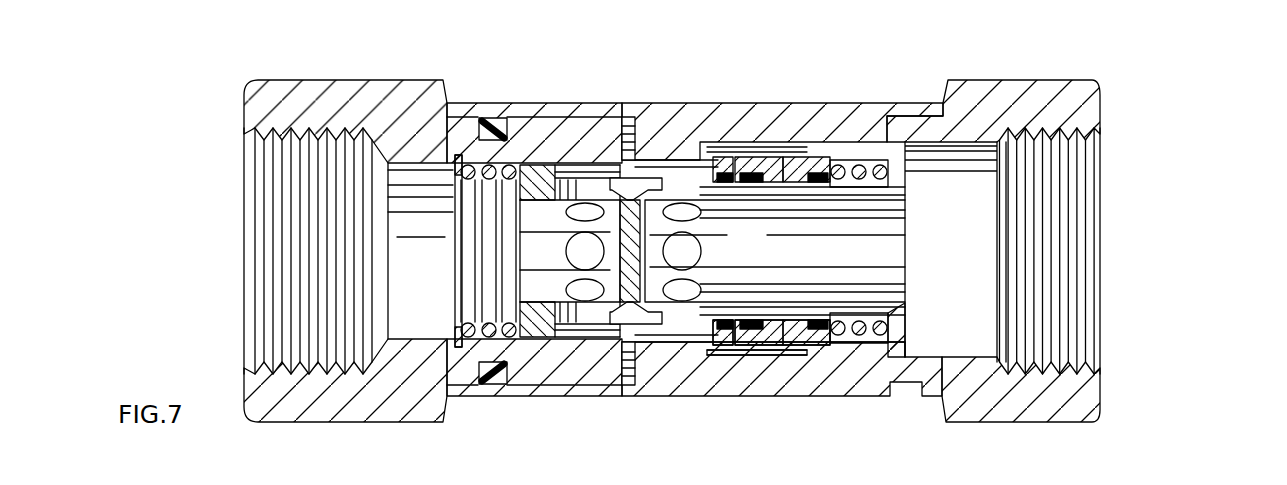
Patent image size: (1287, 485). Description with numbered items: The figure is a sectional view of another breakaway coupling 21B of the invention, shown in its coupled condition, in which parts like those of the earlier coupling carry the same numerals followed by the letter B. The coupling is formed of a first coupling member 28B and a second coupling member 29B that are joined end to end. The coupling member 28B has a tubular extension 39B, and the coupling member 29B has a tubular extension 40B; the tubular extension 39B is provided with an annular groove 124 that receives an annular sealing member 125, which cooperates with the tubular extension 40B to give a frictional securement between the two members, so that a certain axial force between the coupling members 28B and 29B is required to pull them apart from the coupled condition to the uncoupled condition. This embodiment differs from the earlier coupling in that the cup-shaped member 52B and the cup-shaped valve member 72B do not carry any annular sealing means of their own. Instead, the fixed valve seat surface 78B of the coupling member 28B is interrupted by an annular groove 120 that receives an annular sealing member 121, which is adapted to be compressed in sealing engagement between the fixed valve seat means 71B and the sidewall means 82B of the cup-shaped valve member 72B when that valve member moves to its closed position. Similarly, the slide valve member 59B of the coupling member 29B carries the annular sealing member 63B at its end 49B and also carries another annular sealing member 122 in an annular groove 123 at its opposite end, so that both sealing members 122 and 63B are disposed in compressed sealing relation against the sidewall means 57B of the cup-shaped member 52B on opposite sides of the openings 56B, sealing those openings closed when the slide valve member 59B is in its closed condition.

The breakaway coupling 21B is at (1177, 97).
The coupling member 28B is at (340, 80).
The coupling member 29B is at (1045, 80).
The tubular extension 39B is at (558, 370).
The tubular extension 40B is at (613, 397).
The annular groove 124 is at (473, 128).
The annular sealing member 125 is at (492, 126).
The cup-shaped valve member 72B is at (540, 177).
The sidewall means 82B is at (612, 188).
The openings 56B is at (708, 254).
The annular sealing member 121 is at (775, 251).
The fixed valve seat means 71B is at (730, 165).
The cup-shaped member 52B is at (775, 147).
The slide valve member 59B is at (800, 163).
The sidewall means 57B is at (845, 186).
The fixed valve seat surface 78B is at (725, 340).
The annular sealing member 122 is at (760, 350).
The annular groove 123 is at (757, 342).
The annular groove 120 is at (718, 330).
The annular sealing member 63B is at (818, 320).
The end 49B is at (837, 328).